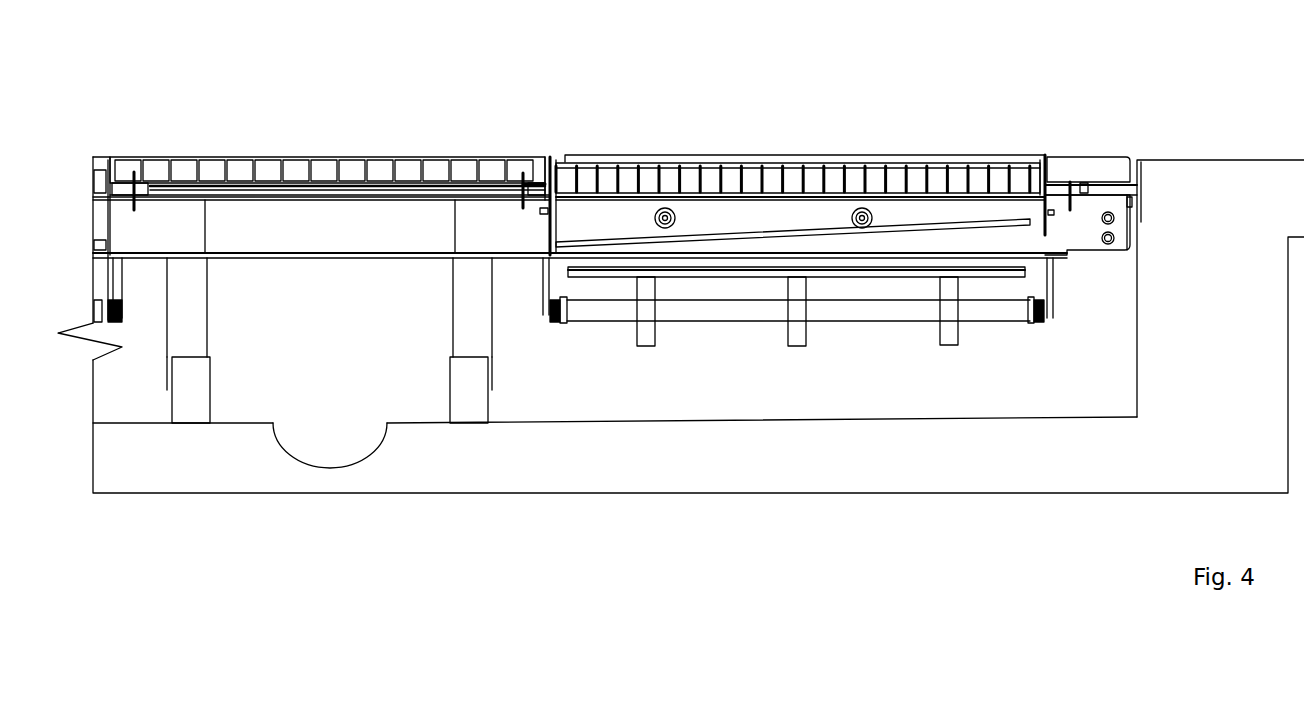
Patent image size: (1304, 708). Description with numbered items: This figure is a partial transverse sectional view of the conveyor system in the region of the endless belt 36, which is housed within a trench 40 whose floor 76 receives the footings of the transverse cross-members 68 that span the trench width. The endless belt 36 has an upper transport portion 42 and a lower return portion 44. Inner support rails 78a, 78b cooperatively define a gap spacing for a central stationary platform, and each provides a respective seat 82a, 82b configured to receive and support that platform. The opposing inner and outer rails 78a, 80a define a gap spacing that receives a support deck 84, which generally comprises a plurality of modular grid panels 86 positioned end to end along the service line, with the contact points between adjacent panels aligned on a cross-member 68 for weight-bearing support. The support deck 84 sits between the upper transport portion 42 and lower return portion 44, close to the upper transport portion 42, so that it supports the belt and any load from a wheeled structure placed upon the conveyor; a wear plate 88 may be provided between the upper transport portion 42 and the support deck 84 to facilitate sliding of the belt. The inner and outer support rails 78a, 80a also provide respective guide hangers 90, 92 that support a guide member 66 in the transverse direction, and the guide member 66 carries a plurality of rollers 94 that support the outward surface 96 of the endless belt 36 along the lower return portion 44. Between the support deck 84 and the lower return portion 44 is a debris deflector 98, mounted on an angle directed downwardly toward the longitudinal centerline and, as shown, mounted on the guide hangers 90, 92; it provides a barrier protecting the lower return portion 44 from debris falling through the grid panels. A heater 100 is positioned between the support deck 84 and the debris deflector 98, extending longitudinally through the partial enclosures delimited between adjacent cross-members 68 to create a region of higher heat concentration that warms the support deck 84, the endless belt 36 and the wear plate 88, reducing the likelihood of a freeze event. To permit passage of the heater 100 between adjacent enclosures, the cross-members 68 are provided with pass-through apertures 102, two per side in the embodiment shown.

The endless belt 36 is at (892, 153).
The trench 40 is at (1033, 392).
The upper transport portion 42 is at (626, 152).
The lower return portion 44 is at (718, 280).
The guide member 66 is at (902, 312).
The cross-member 68 is at (410, 235).
The floor 76 is at (655, 400).
The inner support rail 78a is at (553, 152).
The inner support rail 78b is at (114, 157).
The outer support rail 80a is at (1048, 155).
The seat 82a is at (537, 170).
The seat 82b is at (123, 170).
The support deck 84 is at (740, 180).
The modular grid panel 86 is at (815, 183).
The wear plate 88 is at (975, 165).
The guide hanger 90 is at (548, 282).
The guide hanger 92 is at (1055, 290).
The roller 94 is at (946, 332).
The outward surface 96 is at (988, 280).
The debris deflector 98 is at (957, 235).
The heater 100 is at (654, 220).
The pass-through aperture 102 is at (823, 218).